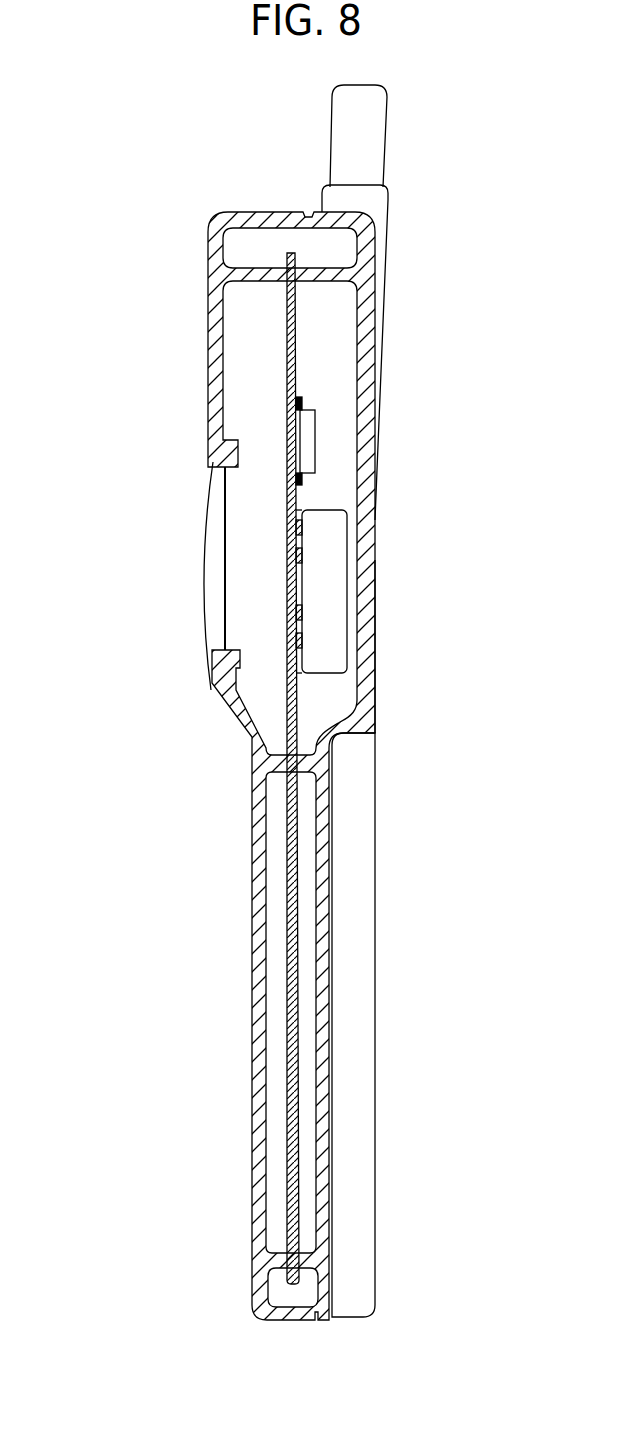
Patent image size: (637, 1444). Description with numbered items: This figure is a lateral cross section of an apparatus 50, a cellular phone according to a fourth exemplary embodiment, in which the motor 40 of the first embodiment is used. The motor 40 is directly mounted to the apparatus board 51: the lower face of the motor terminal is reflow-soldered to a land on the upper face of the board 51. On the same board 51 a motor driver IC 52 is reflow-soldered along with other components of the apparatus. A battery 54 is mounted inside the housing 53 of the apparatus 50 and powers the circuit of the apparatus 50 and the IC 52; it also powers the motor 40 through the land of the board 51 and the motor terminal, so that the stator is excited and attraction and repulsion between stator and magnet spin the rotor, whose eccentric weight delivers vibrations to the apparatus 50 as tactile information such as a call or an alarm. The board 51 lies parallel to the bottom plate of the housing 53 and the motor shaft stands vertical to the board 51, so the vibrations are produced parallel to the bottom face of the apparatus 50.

The apparatus 50 is at (376, 260).
The apparatus board 51 is at (283, 342).
The motor driver IC 52 is at (303, 443).
The motor 40 is at (317, 583).
The housing 53 is at (375, 657).
The battery 54 is at (347, 1075).